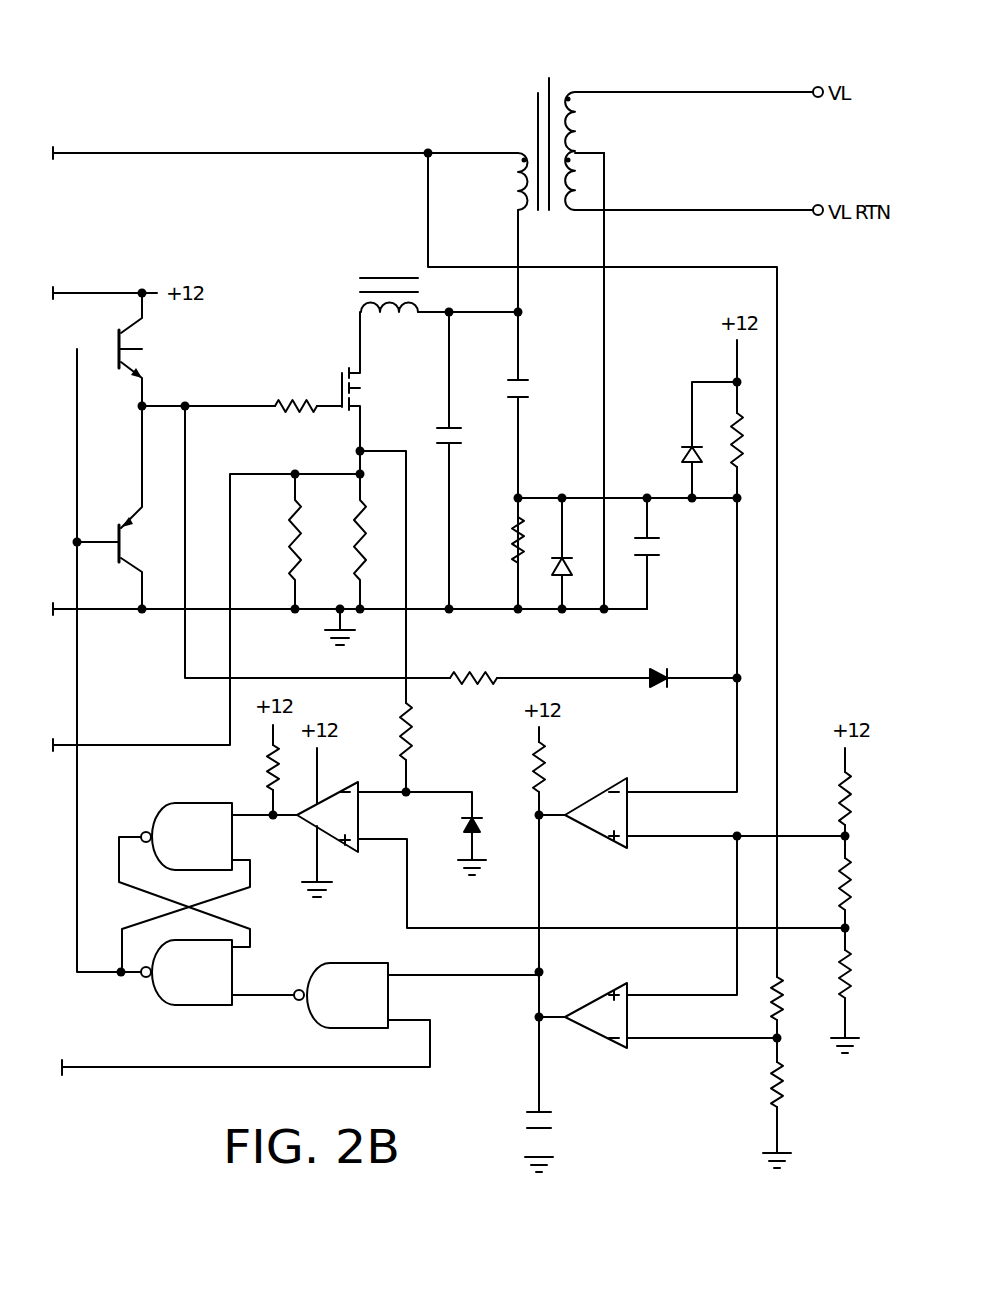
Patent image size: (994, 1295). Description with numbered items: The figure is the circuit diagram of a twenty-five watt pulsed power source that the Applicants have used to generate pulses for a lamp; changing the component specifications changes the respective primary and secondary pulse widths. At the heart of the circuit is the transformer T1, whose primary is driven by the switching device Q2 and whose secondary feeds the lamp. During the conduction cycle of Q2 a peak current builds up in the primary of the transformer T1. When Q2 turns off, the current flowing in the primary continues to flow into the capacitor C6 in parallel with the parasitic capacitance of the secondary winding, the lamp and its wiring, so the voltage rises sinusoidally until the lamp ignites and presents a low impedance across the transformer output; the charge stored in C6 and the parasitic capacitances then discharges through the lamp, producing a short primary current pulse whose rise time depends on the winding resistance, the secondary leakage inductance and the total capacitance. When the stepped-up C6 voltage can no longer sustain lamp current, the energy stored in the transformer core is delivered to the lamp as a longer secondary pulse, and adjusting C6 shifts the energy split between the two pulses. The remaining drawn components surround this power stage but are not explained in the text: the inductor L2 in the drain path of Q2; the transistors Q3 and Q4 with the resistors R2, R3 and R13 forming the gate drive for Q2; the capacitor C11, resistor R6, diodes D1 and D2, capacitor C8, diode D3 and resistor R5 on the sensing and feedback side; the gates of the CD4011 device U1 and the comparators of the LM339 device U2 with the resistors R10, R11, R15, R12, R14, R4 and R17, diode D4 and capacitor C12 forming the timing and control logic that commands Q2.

The transformer T1 is at (542, 111).
The inductor FB43-287 J.W. MARKER L2 is at (363, 252).
The transistor Q2 is at (328, 391).
The transistor PN2222 Q3 is at (170, 349).
The transistor PN2907 Q4 is at (140, 535).
The resistor 10 ohm R2 is at (292, 382).
The resistor .1 ohm 11V R3 is at (381, 541).
The resistor .1 ohm 11V / 6.3K R13 is at (594, 692).
The resistor 6.3V / 380 ohm R5 is at (575, 586).
The resistor 5.6K R6 is at (498, 553).
The resistor 10K R10 is at (257, 759).
The resistor 47K R11 is at (521, 770).
The resistor 4.7K R12 is at (869, 797).
The resistor 470 ohm R14 is at (866, 974).
The resistor 1K R15 is at (473, 703).
The resistor 10K R4 is at (798, 997).
The resistor 6.3K R17 is at (801, 1084).
The capacitor C6 is at (433, 400).
The capacitor 220PF 1000V C8 is at (683, 562).
The capacitor 10PF 1000V C11 is at (551, 399).
The capacitor .001 1000V C12 is at (572, 1143).
The diode 1N4148 D1 is at (578, 615).
The diode 1N4148 D2 is at (671, 654).
The diode 1N4140 D3 is at (663, 428).
The diode 1N4148 D4 is at (507, 827).
The NAND gate CD4011 U1 is at (251, 903).
The comparator LM339 U2 is at (470, 928).